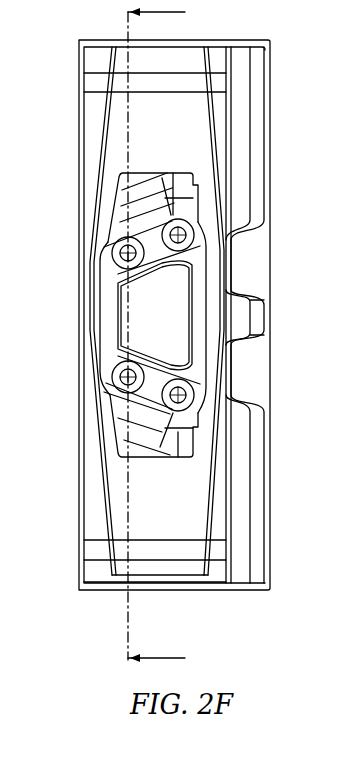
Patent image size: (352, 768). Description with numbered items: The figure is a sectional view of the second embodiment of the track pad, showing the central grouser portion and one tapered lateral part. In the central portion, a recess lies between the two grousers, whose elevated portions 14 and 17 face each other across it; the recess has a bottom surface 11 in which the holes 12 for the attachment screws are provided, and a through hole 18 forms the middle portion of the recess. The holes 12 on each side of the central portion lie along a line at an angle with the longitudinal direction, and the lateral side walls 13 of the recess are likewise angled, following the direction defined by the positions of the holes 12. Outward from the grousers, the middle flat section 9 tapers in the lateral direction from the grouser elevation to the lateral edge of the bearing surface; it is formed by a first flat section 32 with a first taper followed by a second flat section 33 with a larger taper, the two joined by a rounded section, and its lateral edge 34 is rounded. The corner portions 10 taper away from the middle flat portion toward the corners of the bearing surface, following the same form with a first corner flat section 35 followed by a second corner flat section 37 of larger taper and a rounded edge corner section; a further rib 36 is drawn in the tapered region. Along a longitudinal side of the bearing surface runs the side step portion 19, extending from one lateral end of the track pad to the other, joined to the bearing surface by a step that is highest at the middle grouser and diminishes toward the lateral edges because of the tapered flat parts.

The middle flat section 9 is at (153, 535).
The corner portion 10 is at (88, 552).
The bottom surface 11 is at (156, 250).
The holes 12 is at (115, 253).
The lateral side walls 13 is at (143, 437).
The elevated portion 14 is at (102, 312).
The elevated portion 17 is at (212, 308).
The through hole 18 is at (170, 343).
The side step portion 19 is at (250, 135).
The first flat section 32 is at (192, 508).
The second flat section 33 is at (212, 562).
The lateral edge 34 is at (196, 588).
The first corner flat section 35 is at (88, 480).
The upper rib 36 is at (88, 546).
The second corner flat section 37 is at (88, 577).